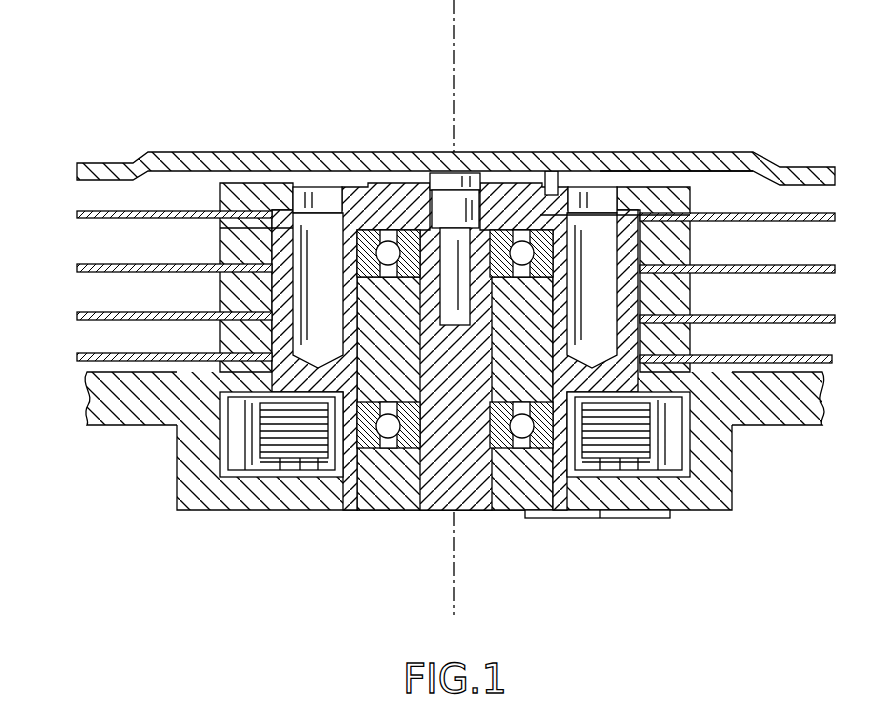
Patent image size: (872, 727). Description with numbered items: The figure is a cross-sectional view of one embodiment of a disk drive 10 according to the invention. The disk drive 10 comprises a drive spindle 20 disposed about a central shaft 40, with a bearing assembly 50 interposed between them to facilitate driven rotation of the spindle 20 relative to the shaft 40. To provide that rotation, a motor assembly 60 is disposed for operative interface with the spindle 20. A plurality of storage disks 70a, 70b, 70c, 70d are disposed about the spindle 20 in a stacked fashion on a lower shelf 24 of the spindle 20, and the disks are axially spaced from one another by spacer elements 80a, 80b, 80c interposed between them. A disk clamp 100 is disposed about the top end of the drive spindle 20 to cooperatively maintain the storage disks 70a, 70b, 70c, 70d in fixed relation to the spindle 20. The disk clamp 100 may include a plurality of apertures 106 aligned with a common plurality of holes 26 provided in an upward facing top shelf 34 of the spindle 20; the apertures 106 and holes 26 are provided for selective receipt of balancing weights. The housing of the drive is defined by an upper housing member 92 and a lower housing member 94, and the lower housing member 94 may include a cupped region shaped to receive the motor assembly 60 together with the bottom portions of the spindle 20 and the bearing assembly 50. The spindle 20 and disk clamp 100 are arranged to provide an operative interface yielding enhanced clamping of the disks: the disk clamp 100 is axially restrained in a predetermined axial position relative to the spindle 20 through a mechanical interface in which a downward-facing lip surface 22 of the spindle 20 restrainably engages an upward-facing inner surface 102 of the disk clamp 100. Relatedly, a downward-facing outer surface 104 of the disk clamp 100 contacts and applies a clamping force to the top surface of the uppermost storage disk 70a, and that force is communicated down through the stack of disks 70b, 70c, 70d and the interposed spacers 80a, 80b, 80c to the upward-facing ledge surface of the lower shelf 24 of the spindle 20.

The disk drive 10 is at (135, 100).
The drive spindle 20 is at (238, 425).
The downward-facing lip surface 22 is at (552, 183).
The lower shelf 24 is at (235, 378).
The holes 26 is at (317, 247).
The top shelf 34 is at (272, 227).
The central shaft 40 is at (436, 200).
The bearing assembly 50 is at (388, 230).
The motor assembly 60 is at (760, 402).
The storage disk 70a is at (95, 210).
The storage disk 70b is at (95, 263).
The storage disk 70c is at (95, 311).
The storage disk 70d is at (95, 352).
The spacer element 80a is at (690, 232).
The spacer element 80b is at (690, 283).
The spacer element 80c is at (690, 330).
The upper housing member 92 is at (745, 155).
The lower housing member 94 is at (718, 497).
The disk clamp 100 is at (655, 162).
The upward-facing inner surface 102 is at (565, 195).
The downward-facing outer surface 104 is at (232, 205).
The apertures 106 is at (323, 193).